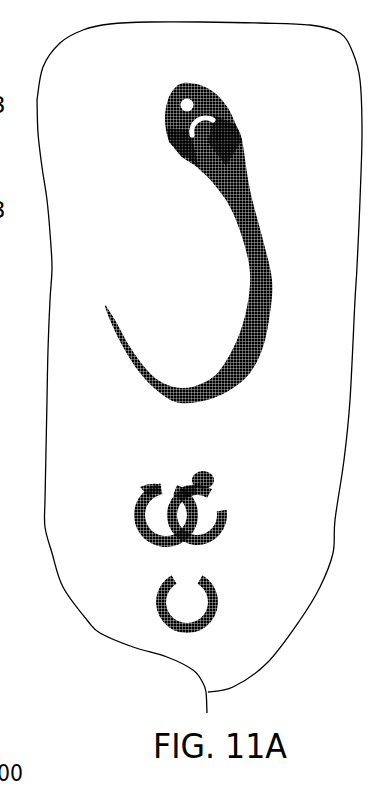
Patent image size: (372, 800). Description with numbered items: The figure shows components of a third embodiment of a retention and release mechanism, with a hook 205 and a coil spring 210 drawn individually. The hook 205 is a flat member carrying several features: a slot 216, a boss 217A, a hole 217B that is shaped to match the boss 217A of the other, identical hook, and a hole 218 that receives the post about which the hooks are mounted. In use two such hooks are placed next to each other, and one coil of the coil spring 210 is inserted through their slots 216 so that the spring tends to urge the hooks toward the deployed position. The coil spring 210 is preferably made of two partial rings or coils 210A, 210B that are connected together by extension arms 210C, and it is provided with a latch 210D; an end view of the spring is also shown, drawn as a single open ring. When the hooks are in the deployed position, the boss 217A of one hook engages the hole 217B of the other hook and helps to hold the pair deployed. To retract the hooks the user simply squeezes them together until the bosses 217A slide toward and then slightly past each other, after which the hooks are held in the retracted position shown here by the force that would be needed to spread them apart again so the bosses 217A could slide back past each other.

The hook 205 is at (245, 175).
The slot 216 is at (192, 135).
The boss 217A is at (183, 157).
The hole 217B is at (228, 128).
The hole 218 is at (188, 100).
The coil spring 210 is at (220, 587).
The partial ring 210A is at (217, 498).
The partial ring 210B is at (128, 505).
The extension arms 210C is at (187, 493).
The latch 210D is at (205, 467).